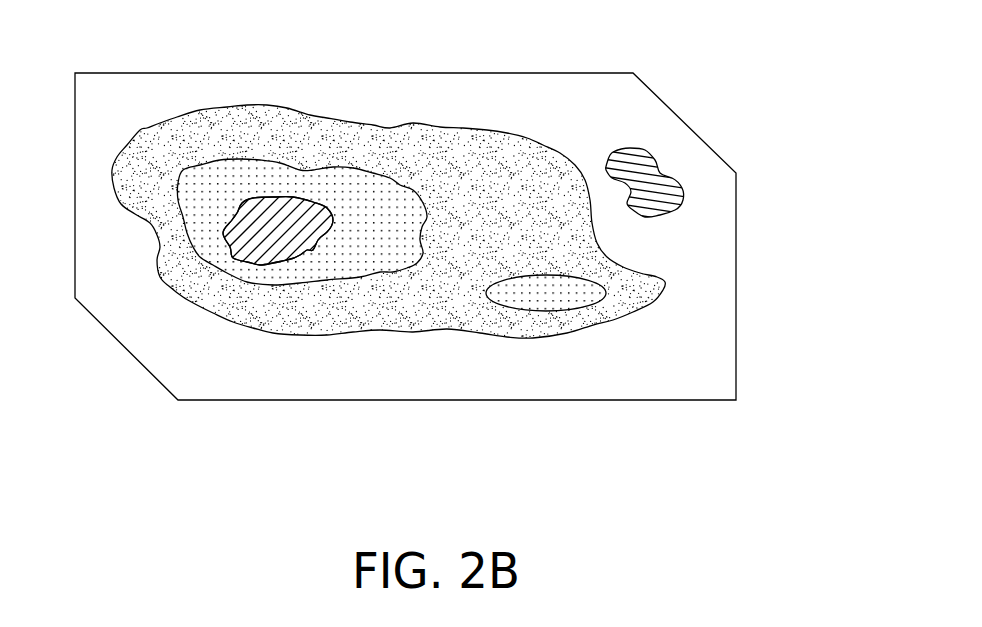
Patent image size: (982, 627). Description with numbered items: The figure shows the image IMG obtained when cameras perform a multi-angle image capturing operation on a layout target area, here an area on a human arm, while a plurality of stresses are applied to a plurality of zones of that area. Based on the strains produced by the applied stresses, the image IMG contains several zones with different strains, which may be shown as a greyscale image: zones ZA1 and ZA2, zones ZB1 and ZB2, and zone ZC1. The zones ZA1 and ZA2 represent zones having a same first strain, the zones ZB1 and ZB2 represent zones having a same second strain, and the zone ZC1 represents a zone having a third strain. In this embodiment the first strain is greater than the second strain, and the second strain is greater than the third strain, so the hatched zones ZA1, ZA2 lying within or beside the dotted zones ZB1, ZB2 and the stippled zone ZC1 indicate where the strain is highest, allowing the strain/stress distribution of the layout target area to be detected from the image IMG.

The image IMG is at (662, 100).
The zone having a first strain ZA1 is at (288, 265).
The zone having a first strain ZA2 is at (667, 183).
The zone having a second strain ZB1 is at (350, 195).
The zone having a second strain ZB2 is at (548, 300).
The zone having a third strain ZC1 is at (487, 153).